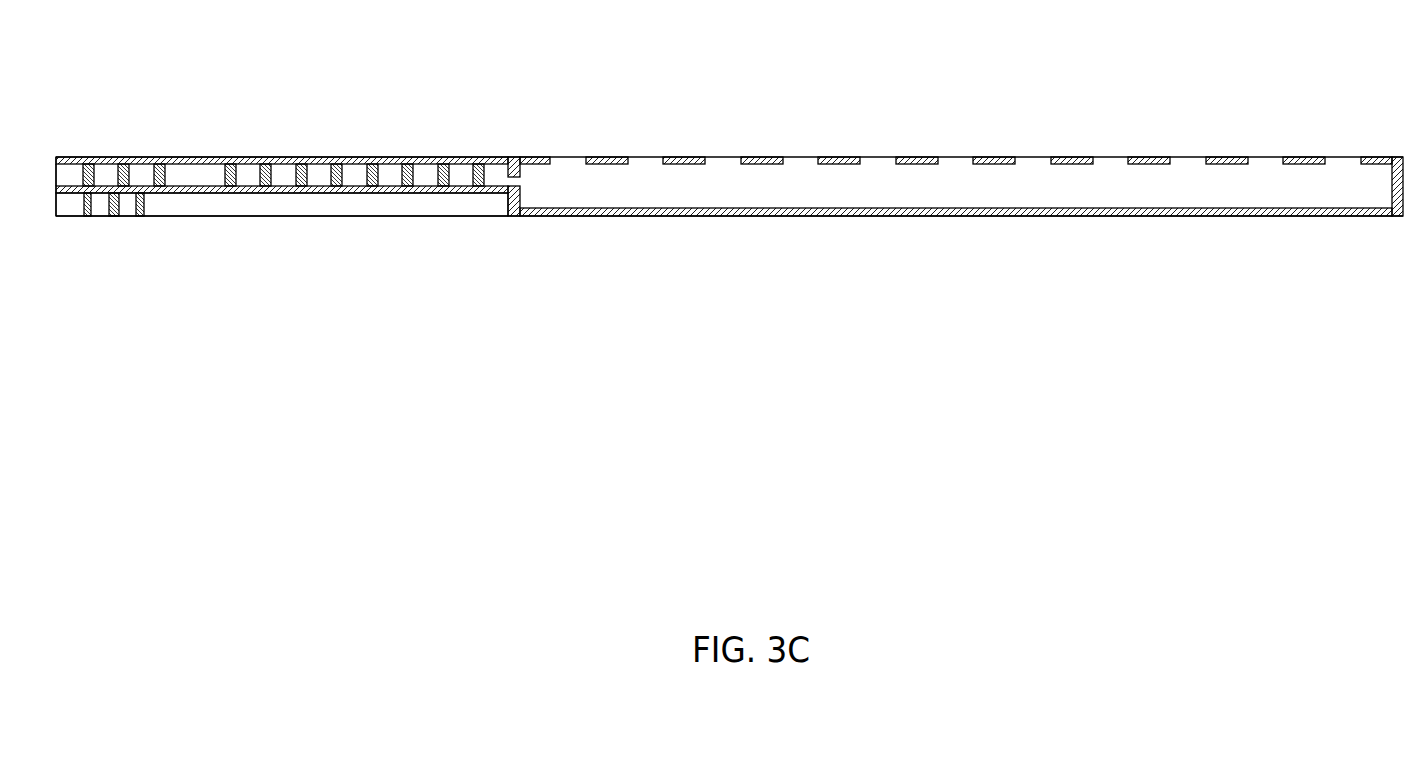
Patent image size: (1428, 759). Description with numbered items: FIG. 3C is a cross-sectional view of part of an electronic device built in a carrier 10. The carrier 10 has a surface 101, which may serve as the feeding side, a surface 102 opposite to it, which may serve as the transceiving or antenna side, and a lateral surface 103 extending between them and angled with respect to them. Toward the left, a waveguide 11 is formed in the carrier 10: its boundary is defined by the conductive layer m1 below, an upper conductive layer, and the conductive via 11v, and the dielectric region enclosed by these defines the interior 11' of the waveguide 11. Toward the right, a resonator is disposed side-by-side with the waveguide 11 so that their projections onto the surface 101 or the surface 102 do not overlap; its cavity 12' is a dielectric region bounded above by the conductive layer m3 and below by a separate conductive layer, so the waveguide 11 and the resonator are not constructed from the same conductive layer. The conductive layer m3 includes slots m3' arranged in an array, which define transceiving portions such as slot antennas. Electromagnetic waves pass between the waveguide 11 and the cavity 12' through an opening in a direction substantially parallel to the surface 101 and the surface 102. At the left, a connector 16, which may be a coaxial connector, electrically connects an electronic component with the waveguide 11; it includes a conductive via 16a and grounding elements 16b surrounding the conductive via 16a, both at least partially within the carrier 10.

The carrier 10 is at (200, 216).
The surface 101 is at (294, 216).
The surface 102 is at (121, 157).
The surface 103 is at (56, 172).
The waveguide 11 is at (288, 109).
The conductive via 11v is at (335, 164).
The conductive layer m1 is at (393, 190).
The interior 11' is at (195, 129).
The conductive layer m3 is at (956, 117).
The slots m3' is at (721, 117).
The cavity 12' is at (956, 139).
The connector 16 is at (165, 272).
The conductive via 16a is at (114, 216).
The grounding elements 16b is at (89, 216).